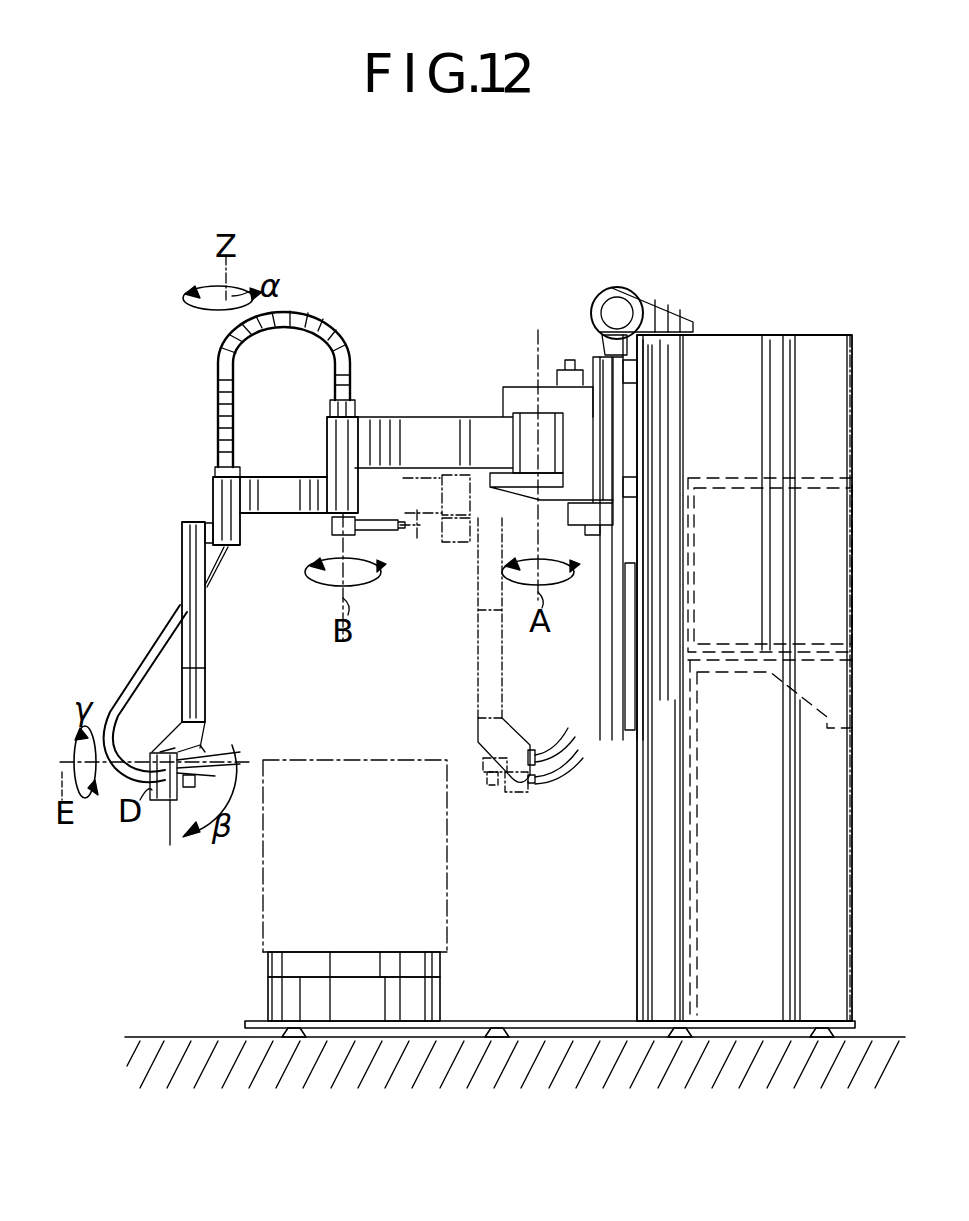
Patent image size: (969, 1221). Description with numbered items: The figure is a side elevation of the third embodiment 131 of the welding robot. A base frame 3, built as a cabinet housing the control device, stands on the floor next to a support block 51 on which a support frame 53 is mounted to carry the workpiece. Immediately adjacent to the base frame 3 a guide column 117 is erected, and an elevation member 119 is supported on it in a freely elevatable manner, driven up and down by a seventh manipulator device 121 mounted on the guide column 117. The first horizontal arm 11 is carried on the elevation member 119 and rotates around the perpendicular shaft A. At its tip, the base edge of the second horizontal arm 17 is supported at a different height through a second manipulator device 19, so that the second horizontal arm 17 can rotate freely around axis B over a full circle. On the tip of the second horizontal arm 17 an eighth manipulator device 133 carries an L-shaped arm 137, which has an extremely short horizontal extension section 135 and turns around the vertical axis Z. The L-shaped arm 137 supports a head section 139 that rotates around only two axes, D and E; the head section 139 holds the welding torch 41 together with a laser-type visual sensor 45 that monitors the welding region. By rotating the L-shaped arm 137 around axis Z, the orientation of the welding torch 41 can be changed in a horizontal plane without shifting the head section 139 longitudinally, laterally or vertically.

The base frame 3 is at (846, 402).
The first horizontal arm 11 is at (412, 420).
The second horizontal arm 17 is at (270, 478).
The second manipulator device 19 is at (358, 400).
The welding torch 41 is at (205, 758).
The laser-type visual sensor 45 is at (490, 786).
The support block 51 is at (270, 1000).
The support frame 53 is at (268, 962).
The guide column 117 is at (655, 404).
The elevation member 119 is at (592, 535).
The seventh manipulator device 121 is at (622, 293).
The third embodiment 131 is at (718, 306).
The eighth manipulator device 133 is at (213, 477).
The horizontal extension section 135 is at (205, 523).
The L-shaped arm 137 is at (182, 535).
The head section 139 is at (218, 720).